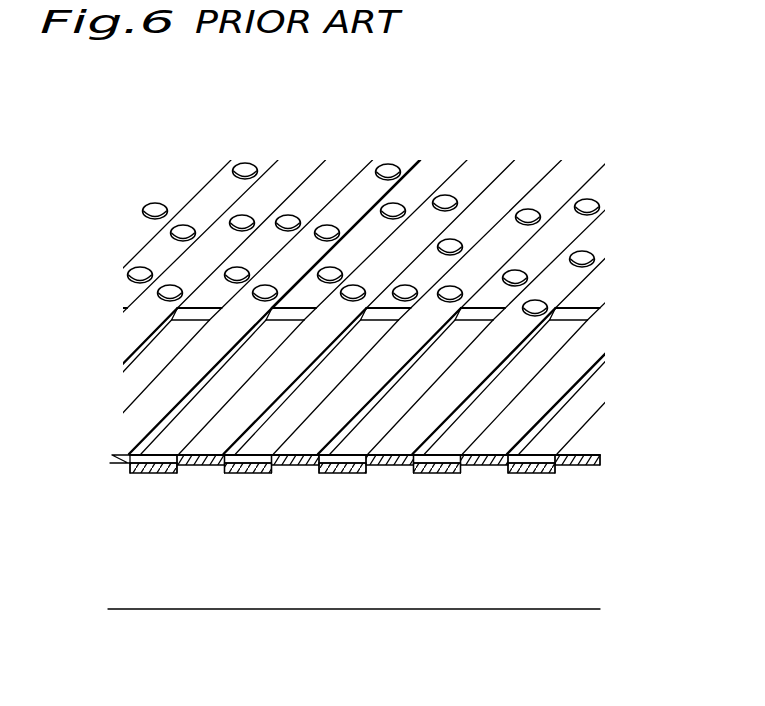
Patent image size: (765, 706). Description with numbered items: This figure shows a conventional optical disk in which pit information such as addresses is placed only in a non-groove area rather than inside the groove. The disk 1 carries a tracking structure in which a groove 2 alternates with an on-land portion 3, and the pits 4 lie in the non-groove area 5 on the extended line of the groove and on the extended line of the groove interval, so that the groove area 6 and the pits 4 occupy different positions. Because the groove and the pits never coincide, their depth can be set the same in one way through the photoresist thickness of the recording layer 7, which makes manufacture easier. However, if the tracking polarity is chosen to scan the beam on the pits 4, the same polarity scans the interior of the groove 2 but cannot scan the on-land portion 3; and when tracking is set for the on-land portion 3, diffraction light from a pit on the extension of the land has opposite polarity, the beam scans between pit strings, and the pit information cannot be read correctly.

The substrate 1 is at (452, 611).
The first electrode strips 2 is at (340, 476).
The second electrode strips 3 is at (390, 464).
The apertures 4 is at (400, 166).
The perforated front plate 5 is at (414, 240).
The partition ribs 6 is at (616, 325).
The dielectric layer 7 is at (580, 473).